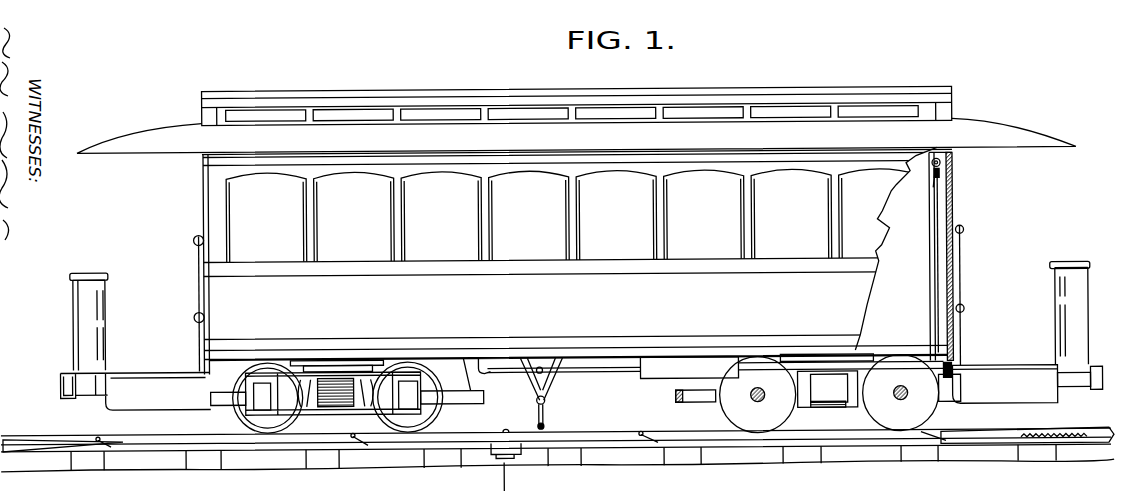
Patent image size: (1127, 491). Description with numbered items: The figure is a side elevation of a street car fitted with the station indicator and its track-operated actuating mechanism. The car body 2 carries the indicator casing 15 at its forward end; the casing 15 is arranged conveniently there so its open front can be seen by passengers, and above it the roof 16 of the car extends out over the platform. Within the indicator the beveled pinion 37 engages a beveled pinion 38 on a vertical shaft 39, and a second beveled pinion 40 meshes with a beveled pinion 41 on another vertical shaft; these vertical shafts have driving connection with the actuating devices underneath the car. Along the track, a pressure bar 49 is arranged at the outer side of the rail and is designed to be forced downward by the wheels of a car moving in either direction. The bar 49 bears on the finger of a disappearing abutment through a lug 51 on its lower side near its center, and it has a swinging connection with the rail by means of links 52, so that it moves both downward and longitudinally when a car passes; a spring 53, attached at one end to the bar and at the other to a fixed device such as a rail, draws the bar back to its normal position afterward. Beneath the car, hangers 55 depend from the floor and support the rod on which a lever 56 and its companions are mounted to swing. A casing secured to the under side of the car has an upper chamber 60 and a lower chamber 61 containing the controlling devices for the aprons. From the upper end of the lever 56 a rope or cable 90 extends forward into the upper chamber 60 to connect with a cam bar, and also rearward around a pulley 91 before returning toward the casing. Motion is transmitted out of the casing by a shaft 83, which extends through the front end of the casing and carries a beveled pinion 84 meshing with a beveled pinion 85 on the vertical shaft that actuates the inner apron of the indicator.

The car body 2 is at (497, 337).
The casing 15 is at (930, 244).
The roof 16 is at (966, 125).
The beveled pinion 37 is at (944, 167).
The beveled pinion 38 is at (944, 181).
The vertical shaft 39 is at (940, 302).
The beveled pinion 40 is at (937, 175).
The beveled pinion 41 is at (941, 186).
The pressure bar 49 is at (620, 431).
The lug 51 is at (517, 460).
The links 52 is at (100, 452).
The spring 53 is at (1022, 445).
The hangers 55 is at (548, 386).
The lever 56 is at (546, 411).
The upper chamber 60 is at (683, 359).
The lower chamber 61 is at (661, 380).
The shaft 83 is at (762, 357).
The beveled pinion 84 is at (955, 363).
The beveled pinion 85 is at (942, 365).
The rope or cable 90 is at (597, 366).
The pulley 91 is at (483, 373).